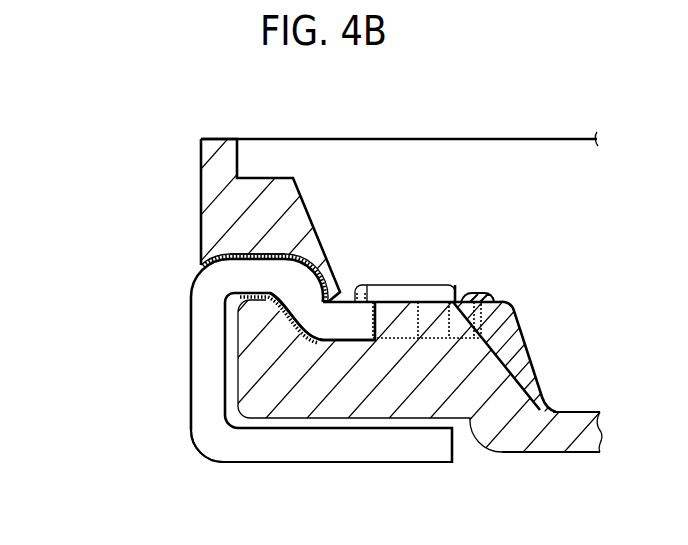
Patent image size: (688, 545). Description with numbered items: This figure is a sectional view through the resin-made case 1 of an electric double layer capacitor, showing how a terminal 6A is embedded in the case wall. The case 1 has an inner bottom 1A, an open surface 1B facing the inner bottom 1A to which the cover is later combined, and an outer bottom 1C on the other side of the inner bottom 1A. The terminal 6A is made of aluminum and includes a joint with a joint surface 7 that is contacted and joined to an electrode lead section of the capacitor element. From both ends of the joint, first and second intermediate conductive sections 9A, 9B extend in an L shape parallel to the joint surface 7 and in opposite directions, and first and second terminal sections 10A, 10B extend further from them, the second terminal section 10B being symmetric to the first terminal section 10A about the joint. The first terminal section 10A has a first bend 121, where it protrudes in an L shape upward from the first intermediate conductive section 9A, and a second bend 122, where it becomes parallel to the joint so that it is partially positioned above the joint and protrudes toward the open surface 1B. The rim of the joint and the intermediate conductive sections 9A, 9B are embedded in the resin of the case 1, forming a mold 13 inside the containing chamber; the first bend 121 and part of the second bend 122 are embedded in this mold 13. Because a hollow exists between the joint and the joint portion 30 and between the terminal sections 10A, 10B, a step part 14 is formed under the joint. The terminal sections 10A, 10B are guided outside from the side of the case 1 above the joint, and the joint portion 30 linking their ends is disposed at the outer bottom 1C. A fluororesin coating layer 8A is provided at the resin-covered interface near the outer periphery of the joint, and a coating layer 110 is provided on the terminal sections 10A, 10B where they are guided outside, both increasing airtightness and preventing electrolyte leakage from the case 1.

The case 1 is at (517, 455).
The inner bottom 1A is at (580, 410).
The open surface 1B is at (447, 138).
The outer bottom 1C is at (580, 454).
The terminal 6A is at (200, 466).
The joint surface 7 is at (447, 285).
The coating layer 8A is at (470, 295).
The first intermediate conductive section 9A is at (416, 283).
The second intermediate conductive section 9B is at (405, 310).
The first terminal section 10A is at (252, 361).
The second terminal section 10B is at (203, 300).
The mold 13 is at (251, 218).
The step part 14 is at (502, 310).
The joint portion 30 is at (313, 452).
The coating layer 110 is at (202, 262).
The first bend 121 is at (312, 320).
The second bend 122 is at (290, 270).